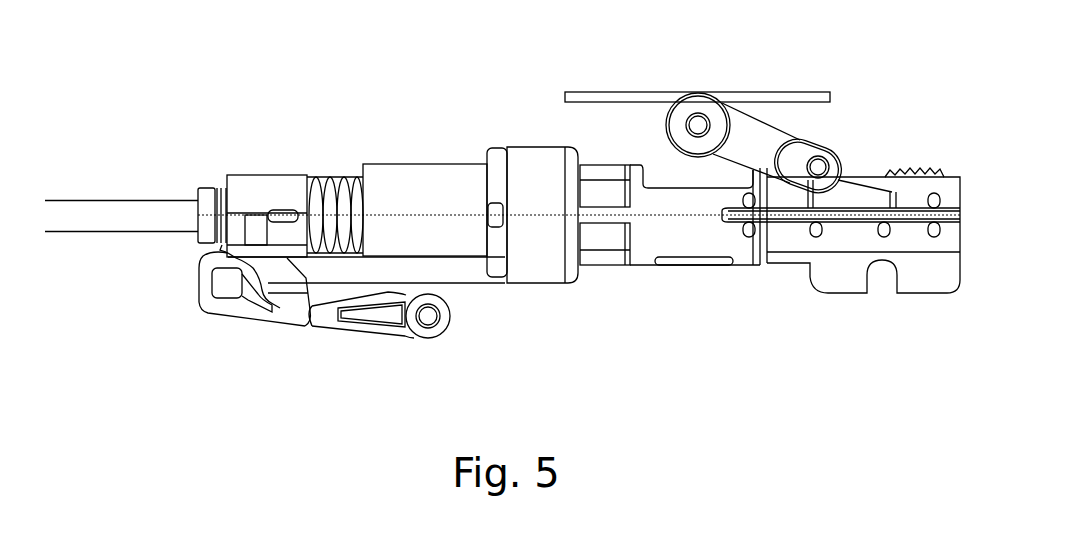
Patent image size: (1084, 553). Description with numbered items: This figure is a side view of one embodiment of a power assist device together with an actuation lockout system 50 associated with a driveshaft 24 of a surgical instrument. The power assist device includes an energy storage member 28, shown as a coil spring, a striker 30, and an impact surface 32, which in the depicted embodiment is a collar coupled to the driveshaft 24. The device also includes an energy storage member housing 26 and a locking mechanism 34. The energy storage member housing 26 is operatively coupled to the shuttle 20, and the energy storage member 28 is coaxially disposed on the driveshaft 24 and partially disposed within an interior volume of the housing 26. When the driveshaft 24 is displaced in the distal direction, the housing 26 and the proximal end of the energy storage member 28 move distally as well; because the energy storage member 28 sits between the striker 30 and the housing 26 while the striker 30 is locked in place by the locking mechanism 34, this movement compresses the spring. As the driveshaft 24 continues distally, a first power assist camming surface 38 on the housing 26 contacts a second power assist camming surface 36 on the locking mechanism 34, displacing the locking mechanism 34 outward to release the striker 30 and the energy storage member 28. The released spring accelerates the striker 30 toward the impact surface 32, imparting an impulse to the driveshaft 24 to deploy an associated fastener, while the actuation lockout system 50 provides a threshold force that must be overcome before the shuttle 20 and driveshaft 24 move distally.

The shuttle 20 is at (687, 238).
The driveshaft 24 is at (158, 222).
The energy storage member housing 26 is at (405, 180).
The energy storage member 28 is at (334, 188).
The striker 30 is at (283, 188).
The impact surface 32 is at (209, 190).
The locking mechanism 34 is at (290, 308).
The second power assist camming surface 36 is at (257, 278).
The first power assist camming surface 38 is at (303, 278).
The actuation lockout system 50 is at (835, 123).